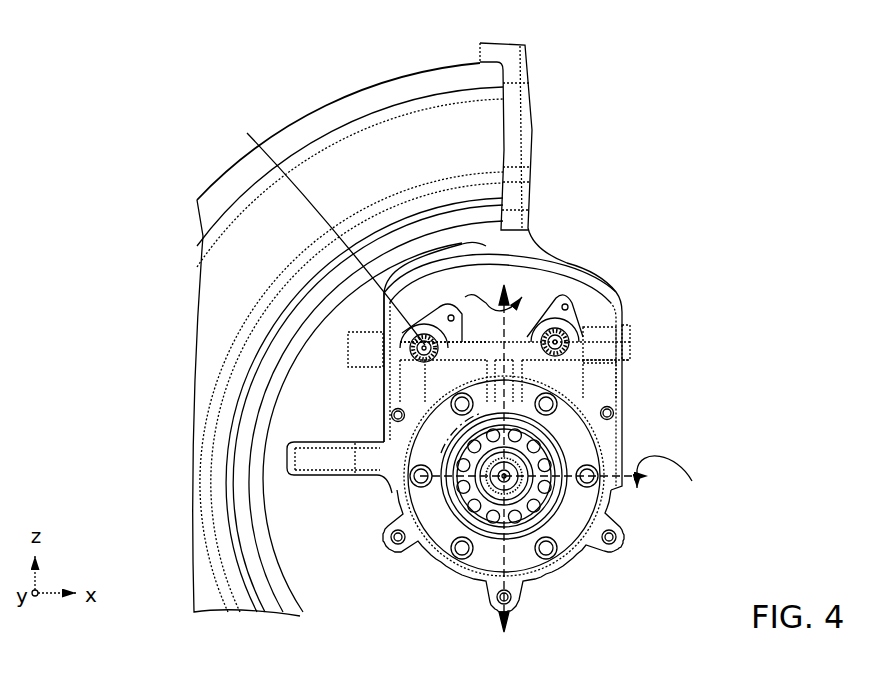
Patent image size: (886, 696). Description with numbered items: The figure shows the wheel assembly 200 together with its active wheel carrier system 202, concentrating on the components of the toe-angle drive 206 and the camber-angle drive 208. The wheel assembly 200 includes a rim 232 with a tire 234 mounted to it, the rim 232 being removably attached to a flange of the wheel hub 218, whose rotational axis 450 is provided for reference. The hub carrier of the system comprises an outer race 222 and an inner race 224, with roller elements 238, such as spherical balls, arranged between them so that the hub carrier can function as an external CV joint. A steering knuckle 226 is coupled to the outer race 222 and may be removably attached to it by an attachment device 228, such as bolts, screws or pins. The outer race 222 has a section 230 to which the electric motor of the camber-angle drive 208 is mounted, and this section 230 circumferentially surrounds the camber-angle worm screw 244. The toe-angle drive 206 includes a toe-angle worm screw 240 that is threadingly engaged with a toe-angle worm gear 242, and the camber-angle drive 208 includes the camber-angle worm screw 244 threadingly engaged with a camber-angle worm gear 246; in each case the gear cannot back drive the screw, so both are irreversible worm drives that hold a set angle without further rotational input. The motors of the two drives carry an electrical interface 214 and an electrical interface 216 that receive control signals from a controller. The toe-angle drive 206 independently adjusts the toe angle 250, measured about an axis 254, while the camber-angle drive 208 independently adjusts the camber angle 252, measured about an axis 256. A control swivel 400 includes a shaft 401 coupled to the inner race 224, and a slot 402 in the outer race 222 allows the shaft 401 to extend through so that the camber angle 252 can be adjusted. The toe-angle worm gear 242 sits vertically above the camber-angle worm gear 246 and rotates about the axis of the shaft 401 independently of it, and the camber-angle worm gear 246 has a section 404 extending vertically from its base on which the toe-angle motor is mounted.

The wheel assembly 200 is at (205, 86).
The active wheel carrier system 202 is at (535, 444).
The toe-angle drive 206 is at (343, 348).
The camber-angle drive 208 is at (647, 347).
The electrical interface 214 is at (375, 360).
The electrical interface 216 is at (604, 340).
The wheel hub 218 is at (521, 504).
The outer race 222 is at (594, 381).
The inner race 224 is at (534, 465).
The steering knuckle 226 is at (531, 137).
The attachment device 228 is at (397, 543).
The section 230 is at (570, 320).
The rim 232 is at (286, 398).
The tire 234 is at (290, 99).
The roller elements 238 is at (456, 404).
The toe-angle worm screw 240 is at (423, 334).
The toe-angle worm gear 242 is at (457, 353).
The camber-angle worm screw 244 is at (553, 328).
The camber-angle worm gear 246 is at (527, 368).
The toe angle 250 is at (479, 295).
The camber angle 252 is at (680, 476).
The axis 254 is at (368, 420).
The axis 256 is at (620, 494).
The control swivel 400 is at (490, 380).
The shaft 401 is at (498, 352).
The slot 402 is at (556, 405).
The section 404 is at (329, 224).
The rotational axis 450 is at (504, 478).